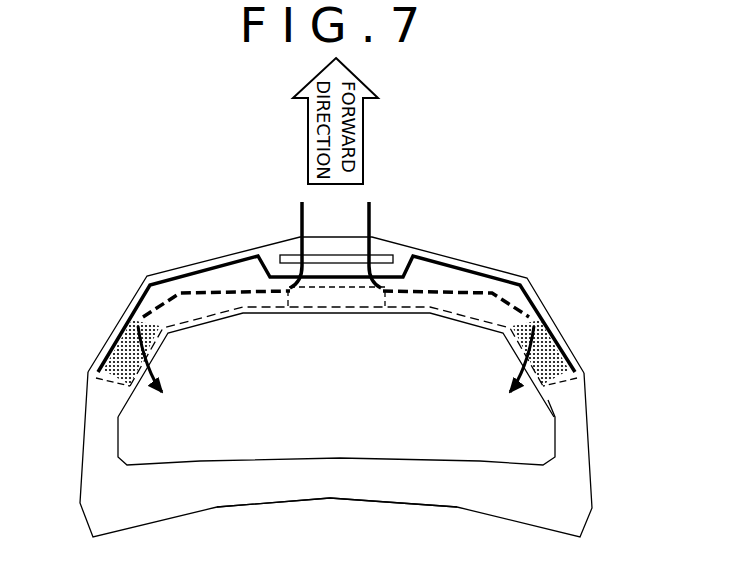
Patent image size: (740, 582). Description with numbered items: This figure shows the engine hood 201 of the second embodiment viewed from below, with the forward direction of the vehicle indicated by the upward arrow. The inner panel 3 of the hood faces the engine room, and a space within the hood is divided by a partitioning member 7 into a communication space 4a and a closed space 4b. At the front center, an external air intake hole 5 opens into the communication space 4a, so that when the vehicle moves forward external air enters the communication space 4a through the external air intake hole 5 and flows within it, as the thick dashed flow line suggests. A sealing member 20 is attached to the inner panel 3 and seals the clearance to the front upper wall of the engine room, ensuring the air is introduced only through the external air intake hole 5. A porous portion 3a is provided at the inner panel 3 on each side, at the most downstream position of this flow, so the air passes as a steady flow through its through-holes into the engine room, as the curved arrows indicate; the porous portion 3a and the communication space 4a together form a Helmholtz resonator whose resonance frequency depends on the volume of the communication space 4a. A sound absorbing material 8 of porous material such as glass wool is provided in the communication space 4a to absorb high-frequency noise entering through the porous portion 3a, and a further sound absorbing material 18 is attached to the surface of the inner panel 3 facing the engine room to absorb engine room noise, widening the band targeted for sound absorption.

The engine hood 201 is at (217, 236).
The inner panel 3 is at (82, 453).
The porous portion 3a is at (113, 343).
The communication space 4a is at (488, 307).
The closed space 4b is at (483, 490).
The external air intake hole 5 is at (336, 255).
The partitioning member 7 is at (197, 318).
The sound absorbing material 8 is at (336, 296).
The sound absorbing material 18 is at (337, 437).
The sealing member 20 is at (455, 262).